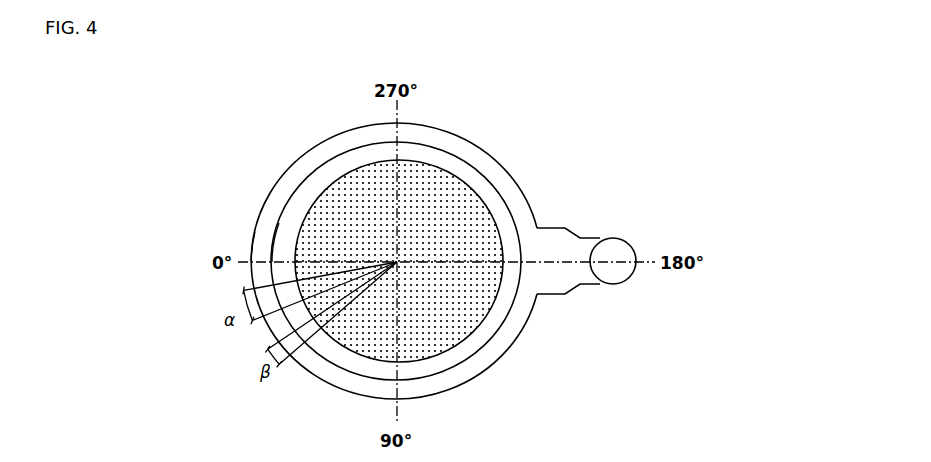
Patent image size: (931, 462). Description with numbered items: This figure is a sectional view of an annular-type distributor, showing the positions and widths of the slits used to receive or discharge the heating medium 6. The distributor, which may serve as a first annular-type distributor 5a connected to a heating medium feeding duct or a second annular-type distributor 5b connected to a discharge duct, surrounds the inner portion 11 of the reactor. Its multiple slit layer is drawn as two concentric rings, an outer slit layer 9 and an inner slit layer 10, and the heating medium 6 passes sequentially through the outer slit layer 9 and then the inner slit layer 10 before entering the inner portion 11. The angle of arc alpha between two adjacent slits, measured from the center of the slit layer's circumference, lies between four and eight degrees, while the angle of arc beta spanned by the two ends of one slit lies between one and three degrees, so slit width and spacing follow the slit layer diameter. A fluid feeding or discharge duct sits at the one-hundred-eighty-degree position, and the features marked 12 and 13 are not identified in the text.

The first annular-type distributor 5a is at (525, 214).
The second annular-type distributor 5b is at (613, 226).
The heating medium 6 is at (363, 193).
The outer slit layer 9 is at (492, 180).
The inner slit layer 10 is at (418, 156).
The inner portion 11 is at (308, 163).
The boundary portion 12 is at (290, 250).
The reference position 13 is at (262, 260).